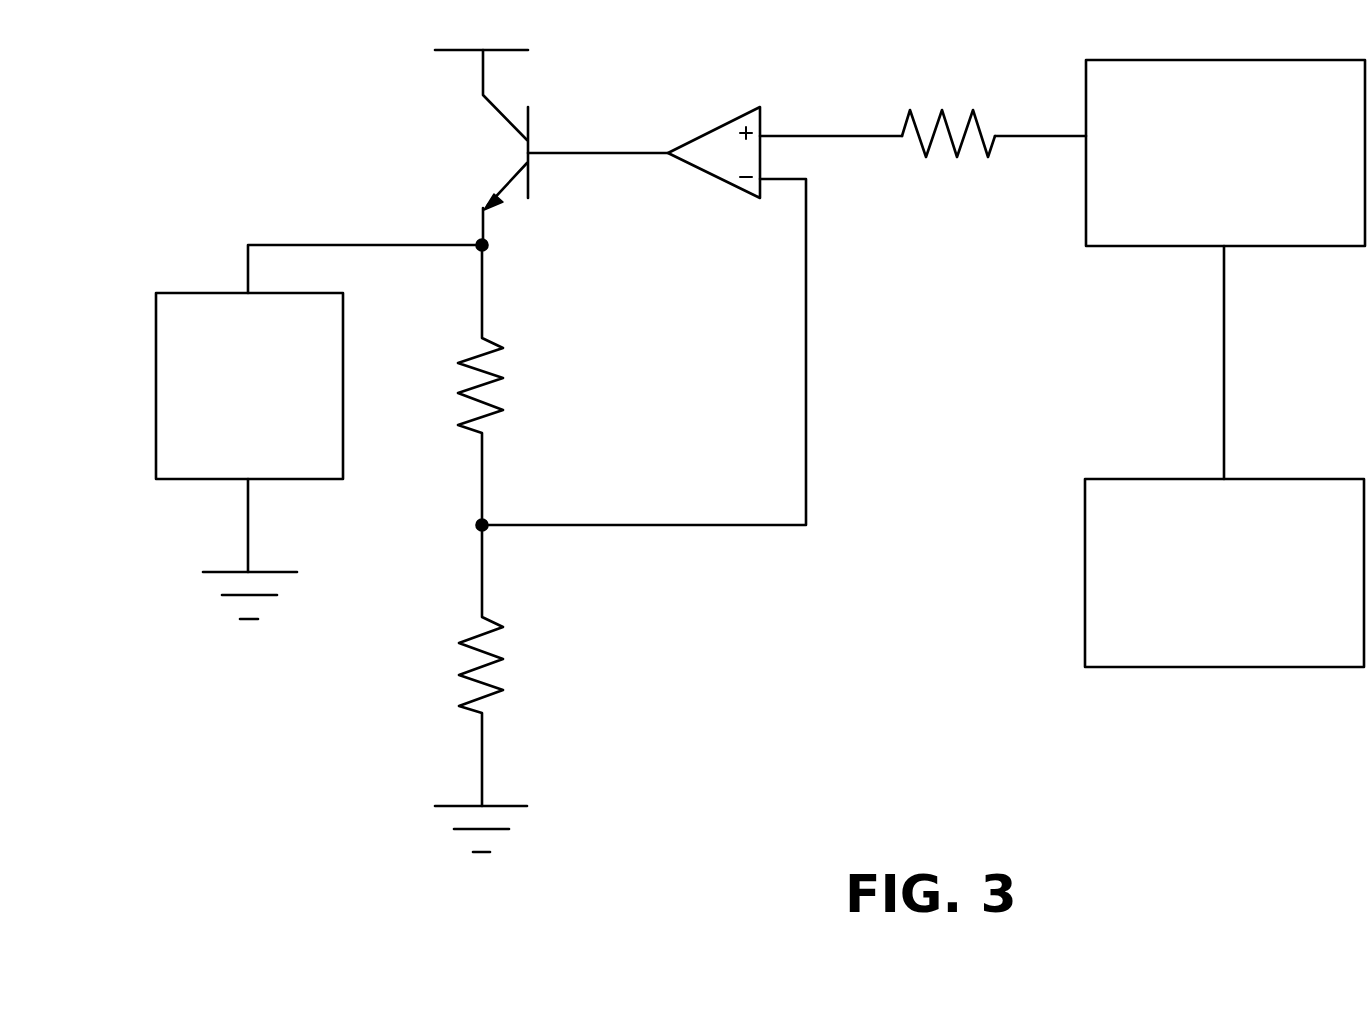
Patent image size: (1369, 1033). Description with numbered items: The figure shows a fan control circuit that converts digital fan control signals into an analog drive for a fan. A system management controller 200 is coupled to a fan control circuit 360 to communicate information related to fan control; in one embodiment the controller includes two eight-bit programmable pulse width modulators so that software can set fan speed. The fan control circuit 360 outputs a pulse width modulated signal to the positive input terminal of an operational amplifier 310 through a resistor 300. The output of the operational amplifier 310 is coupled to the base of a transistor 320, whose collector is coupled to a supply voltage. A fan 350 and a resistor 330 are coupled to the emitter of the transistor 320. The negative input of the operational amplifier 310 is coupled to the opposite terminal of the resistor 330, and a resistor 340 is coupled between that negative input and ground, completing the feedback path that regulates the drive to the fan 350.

The system management controller 200 is at (1355, 657).
The resistor 300 is at (977, 122).
The operational amplifier 310 is at (718, 126).
The transistor 320 is at (567, 147).
The resistor 330 is at (493, 415).
The resistor 340 is at (492, 693).
The fan 350 is at (333, 471).
The fan control circuit 360 is at (1352, 239).